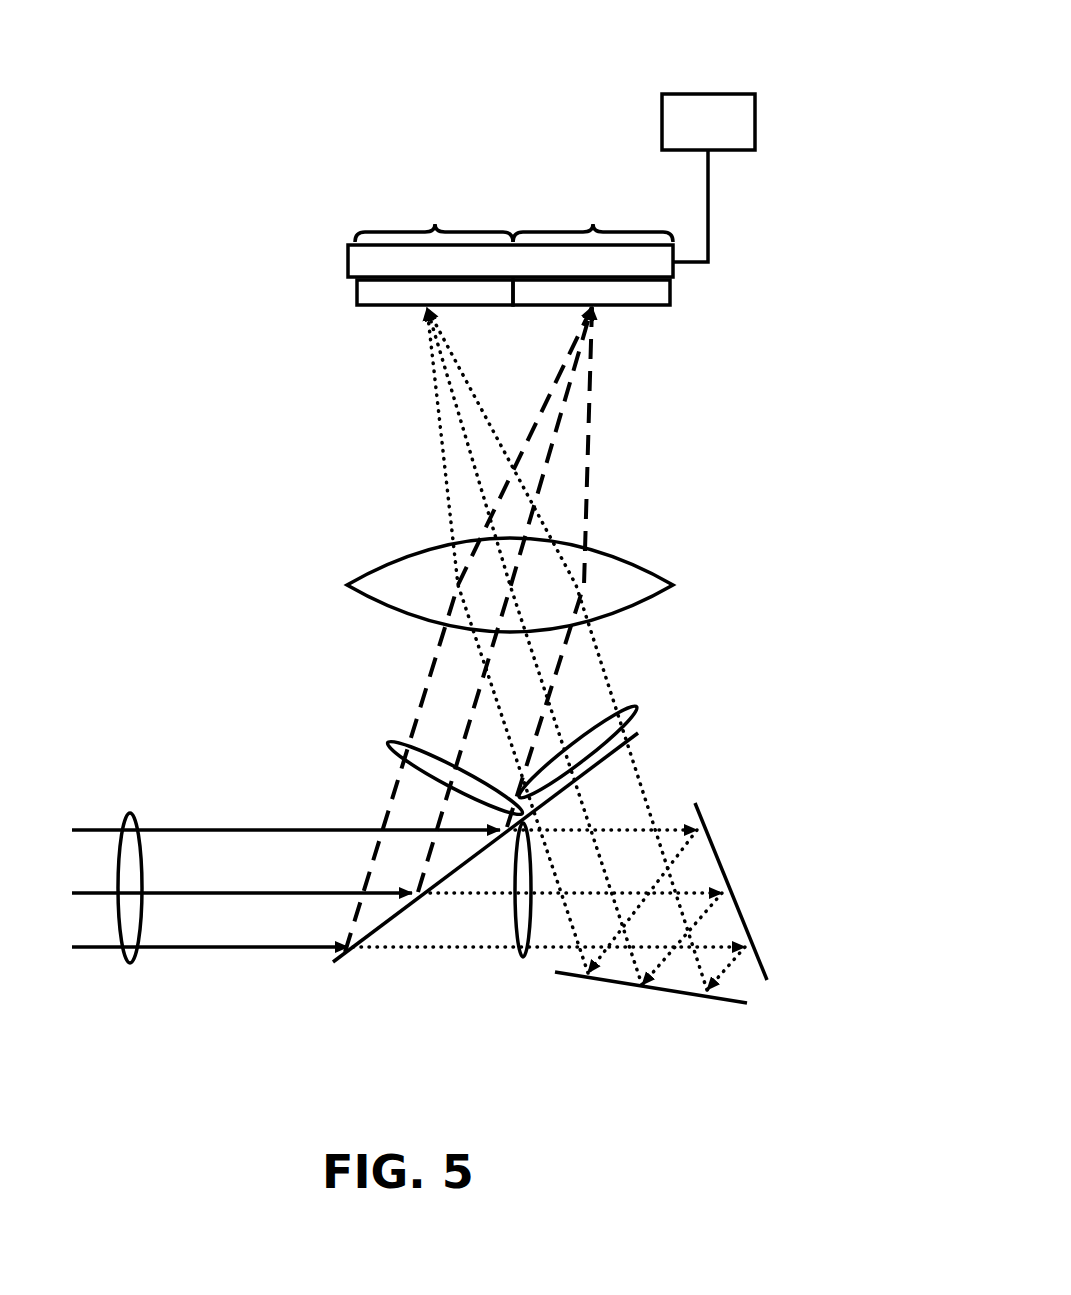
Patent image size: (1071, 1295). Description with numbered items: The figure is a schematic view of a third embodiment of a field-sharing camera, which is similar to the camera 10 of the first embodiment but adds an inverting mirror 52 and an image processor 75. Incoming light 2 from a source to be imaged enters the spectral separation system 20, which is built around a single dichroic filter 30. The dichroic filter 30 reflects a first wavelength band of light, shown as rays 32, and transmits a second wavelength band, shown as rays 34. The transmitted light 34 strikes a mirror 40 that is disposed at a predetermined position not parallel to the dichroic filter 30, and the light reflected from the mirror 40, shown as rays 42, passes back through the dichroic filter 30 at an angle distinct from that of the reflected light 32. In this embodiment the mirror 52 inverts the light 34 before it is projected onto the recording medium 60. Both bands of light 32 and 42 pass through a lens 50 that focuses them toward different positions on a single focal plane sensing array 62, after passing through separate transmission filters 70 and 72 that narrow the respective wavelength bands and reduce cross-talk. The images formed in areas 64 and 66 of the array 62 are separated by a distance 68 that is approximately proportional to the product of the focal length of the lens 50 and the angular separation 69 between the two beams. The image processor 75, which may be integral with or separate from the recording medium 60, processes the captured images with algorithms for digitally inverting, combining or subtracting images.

The incoming light 2 is at (128, 815).
The field-sharing camera 10 is at (145, 407).
The spectral separation system 20 is at (720, 796).
The dichroic filter 30 is at (343, 957).
The rays of first wavelength band 32 is at (397, 750).
The rays of second wavelength band 34 is at (530, 960).
The mirror 40 is at (747, 915).
The reflected light of second wavelength band 42 is at (637, 707).
The lens 50 is at (673, 585).
The mirror 52 is at (647, 988).
The recording medium 60 is at (524, 318).
The focal plane sensing array 62 is at (348, 262).
The image area 64 is at (593, 224).
The image area 66 is at (435, 224).
The distance 68 is at (440, 193).
The angular separation 69 is at (453, 405).
The transmission filter 70 is at (632, 305).
The transmission filter 72 is at (403, 305).
The image processor 75 is at (708, 94).